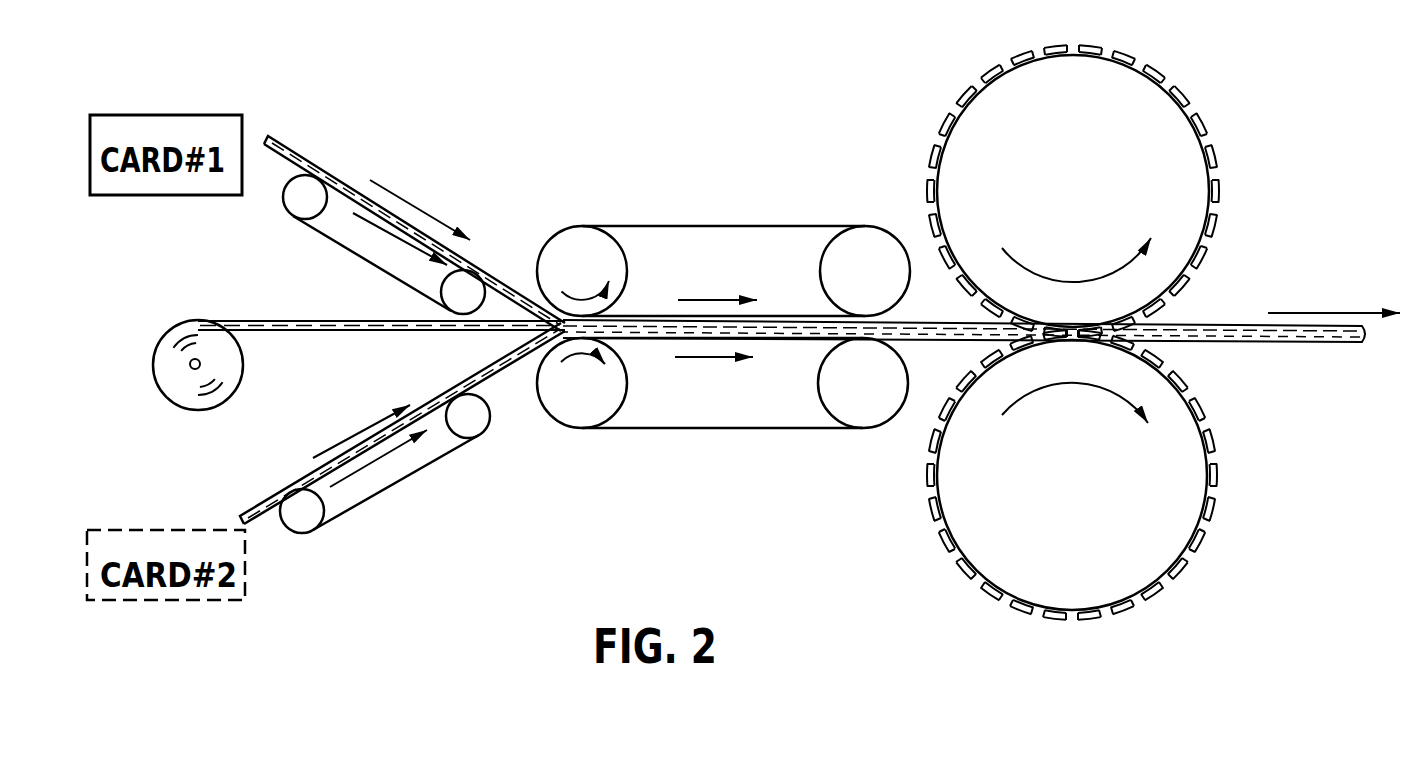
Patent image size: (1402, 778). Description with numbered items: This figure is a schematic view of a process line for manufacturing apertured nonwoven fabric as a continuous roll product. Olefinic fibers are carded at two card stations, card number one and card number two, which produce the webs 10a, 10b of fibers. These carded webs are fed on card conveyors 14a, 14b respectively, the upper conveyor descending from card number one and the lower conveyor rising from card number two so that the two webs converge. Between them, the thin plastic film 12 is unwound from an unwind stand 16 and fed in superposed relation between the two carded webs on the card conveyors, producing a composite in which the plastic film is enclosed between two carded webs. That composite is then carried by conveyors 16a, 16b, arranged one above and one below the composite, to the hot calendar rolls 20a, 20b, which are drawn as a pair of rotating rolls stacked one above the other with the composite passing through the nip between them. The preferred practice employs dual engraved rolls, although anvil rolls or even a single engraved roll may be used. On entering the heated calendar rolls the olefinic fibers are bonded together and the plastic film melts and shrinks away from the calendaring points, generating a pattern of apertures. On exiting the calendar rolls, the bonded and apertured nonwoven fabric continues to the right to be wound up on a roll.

The web of fibers 10a is at (330, 173).
The web of fibers 10b is at (300, 488).
The thin plastic film 12 is at (227, 316).
The card conveyor 14a is at (337, 228).
The card conveyor 14b is at (405, 476).
The unwind stand 16 is at (192, 367).
The conveyor 16a is at (637, 250).
The conveyor 16b is at (693, 405).
The hot calendar roll 20a is at (1163, 163).
The hot calendar roll 20b is at (1147, 518).